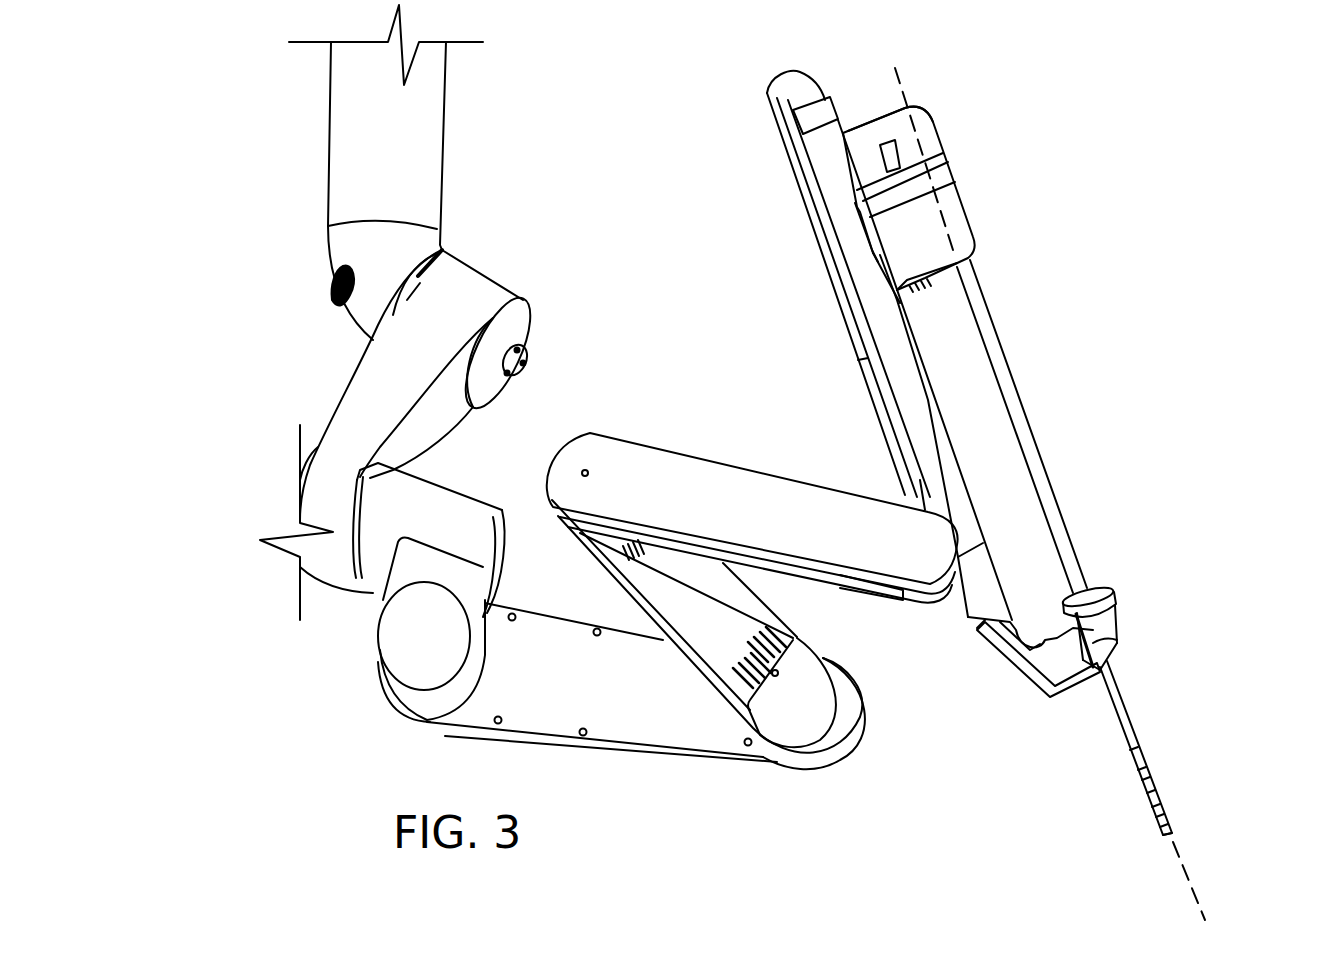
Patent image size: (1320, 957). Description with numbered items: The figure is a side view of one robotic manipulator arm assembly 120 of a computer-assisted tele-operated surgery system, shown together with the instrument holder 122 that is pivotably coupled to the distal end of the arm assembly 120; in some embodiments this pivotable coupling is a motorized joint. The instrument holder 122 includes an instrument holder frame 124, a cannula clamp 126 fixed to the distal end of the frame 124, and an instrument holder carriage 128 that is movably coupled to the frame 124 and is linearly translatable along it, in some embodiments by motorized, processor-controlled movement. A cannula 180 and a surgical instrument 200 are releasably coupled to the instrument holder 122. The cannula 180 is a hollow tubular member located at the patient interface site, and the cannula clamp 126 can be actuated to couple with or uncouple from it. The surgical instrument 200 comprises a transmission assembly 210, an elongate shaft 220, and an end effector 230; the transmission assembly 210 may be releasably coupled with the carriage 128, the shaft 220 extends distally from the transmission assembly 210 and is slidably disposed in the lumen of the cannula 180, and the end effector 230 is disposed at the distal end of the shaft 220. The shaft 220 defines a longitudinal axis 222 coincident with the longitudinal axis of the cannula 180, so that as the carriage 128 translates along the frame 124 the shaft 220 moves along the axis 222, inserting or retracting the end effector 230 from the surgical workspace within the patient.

The robotic manipulator arm assembly 120 is at (553, 170).
The instrument holder 122 is at (752, 118).
The instrument holder frame 124 is at (858, 360).
The cannula clamp 126 is at (1095, 673).
The instrument holder carriage 128 is at (960, 202).
The cannula 180 is at (1128, 693).
The surgical instrument 200 is at (995, 461).
The transmission assembly 210 is at (873, 112).
The elongate shaft 220 is at (1014, 408).
The longitudinal axis 222 is at (942, 117).
The end effector 230 is at (1145, 845).